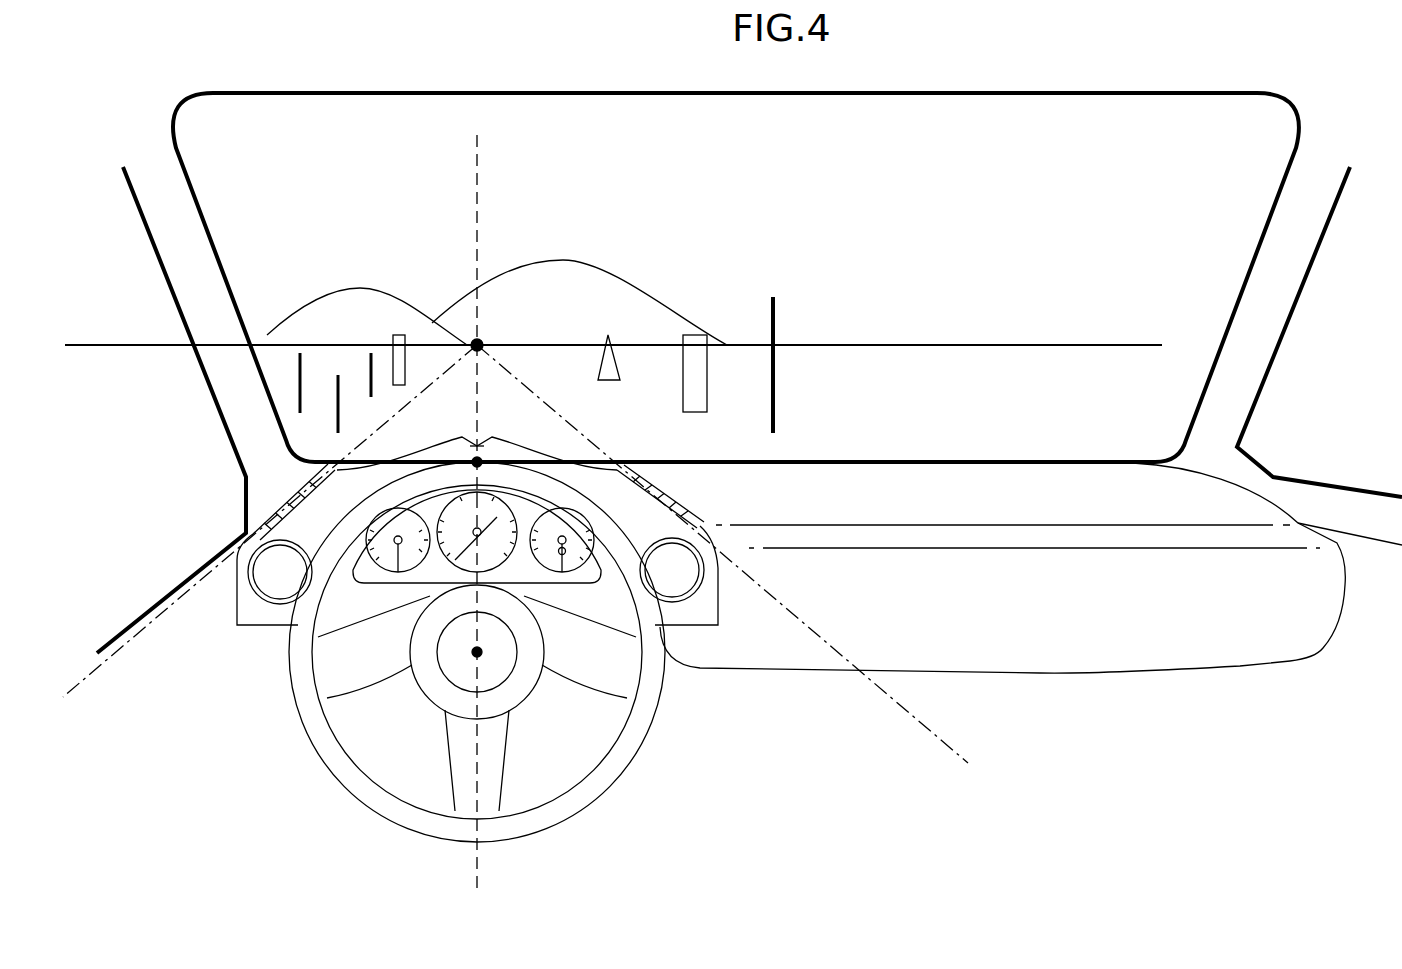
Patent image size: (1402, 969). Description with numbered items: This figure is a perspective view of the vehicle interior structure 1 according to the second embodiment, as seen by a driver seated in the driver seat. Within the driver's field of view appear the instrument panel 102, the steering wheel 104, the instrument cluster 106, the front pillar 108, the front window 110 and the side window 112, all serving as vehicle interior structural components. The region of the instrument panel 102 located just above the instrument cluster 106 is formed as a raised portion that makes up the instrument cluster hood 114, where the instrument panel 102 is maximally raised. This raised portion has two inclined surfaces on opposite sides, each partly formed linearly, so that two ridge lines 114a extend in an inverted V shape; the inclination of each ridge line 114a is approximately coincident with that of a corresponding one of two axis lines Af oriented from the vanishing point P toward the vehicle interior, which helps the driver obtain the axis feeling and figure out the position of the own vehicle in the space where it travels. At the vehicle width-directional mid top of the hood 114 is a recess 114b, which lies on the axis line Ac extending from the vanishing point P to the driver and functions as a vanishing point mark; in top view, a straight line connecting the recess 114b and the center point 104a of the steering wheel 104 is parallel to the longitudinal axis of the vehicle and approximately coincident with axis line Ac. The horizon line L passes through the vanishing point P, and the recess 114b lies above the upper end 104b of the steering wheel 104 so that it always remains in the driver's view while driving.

The vehicle interior structure 1 is at (1113, 754).
The instrument panel 102 is at (972, 476).
The steering wheel 104 is at (623, 738).
The center point 104a is at (475, 655).
The upper end 104b is at (470, 470).
The instrument cluster 106 is at (525, 510).
The front pillar 108 is at (183, 261).
The front window 110 is at (750, 209).
The side window 112 is at (158, 445).
The instrument cluster hood 114 is at (455, 437).
The ridge line 114a is at (290, 500).
The recess 114b is at (480, 445).
The vanishing point P is at (483, 342).
The horizon line L is at (1118, 345).
The axis line Af is at (75, 690).
The axis line Ac is at (483, 866).